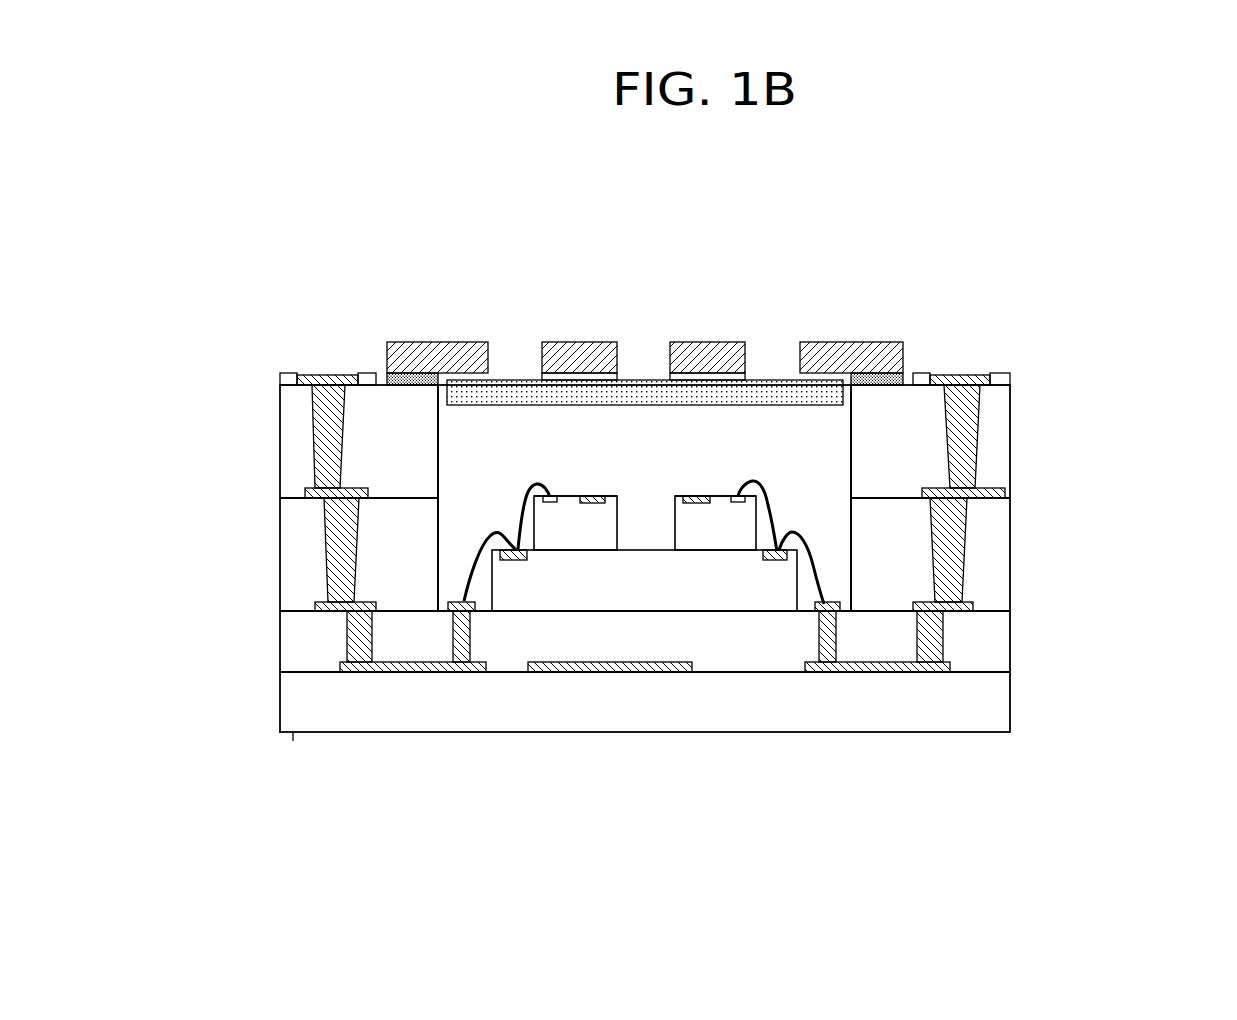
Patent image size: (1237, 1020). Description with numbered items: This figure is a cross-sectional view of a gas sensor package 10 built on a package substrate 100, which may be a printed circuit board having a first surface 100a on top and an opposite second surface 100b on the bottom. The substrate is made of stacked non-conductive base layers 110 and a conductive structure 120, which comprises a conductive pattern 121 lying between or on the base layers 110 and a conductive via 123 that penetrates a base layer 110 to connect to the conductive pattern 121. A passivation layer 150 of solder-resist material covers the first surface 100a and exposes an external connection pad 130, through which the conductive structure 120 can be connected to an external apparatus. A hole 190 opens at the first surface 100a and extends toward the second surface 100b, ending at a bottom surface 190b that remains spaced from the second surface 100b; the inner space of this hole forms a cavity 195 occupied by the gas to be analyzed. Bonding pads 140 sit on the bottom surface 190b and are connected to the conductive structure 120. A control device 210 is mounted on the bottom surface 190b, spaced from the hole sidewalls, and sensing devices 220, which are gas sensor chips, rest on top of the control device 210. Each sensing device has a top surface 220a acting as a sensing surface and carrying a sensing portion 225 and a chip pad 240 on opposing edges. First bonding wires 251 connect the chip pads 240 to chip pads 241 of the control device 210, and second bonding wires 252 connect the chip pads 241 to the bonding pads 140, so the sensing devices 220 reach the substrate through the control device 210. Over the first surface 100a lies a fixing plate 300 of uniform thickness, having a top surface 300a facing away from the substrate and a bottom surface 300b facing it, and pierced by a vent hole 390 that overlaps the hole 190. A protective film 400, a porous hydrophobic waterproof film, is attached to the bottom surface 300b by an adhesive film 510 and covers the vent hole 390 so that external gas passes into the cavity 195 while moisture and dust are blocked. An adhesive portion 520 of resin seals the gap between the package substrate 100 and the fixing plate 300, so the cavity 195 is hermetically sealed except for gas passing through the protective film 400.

The gas sensor package 10 is at (1110, 254).
The package substrate 100 is at (1015, 385).
The first surface 100a is at (293, 376).
The second surface 100b is at (293, 741).
The base layer 110 is at (998, 703).
The conductive structure 120 is at (731, 523).
The conductive pattern 121 is at (983, 493).
The conductive via 123 is at (963, 438).
The external connection pad 130 is at (951, 380).
The bonding pad 140 is at (457, 603).
The passivation layer 150 is at (1001, 378).
The hole 190 is at (452, 535).
The bottom surface of the hole 190b is at (765, 611).
The cavity 195 is at (715, 441).
The control device 210 is at (713, 588).
The sensing device 220 is at (573, 540).
The top surface of the sensing device 220a is at (607, 496).
The sensing portion 225 is at (593, 503).
The chip pad of the sensing device 240 is at (552, 503).
The chip pad of the control device 241 is at (508, 560).
The first bonding wire 251 is at (533, 493).
The second bonding wire 252 is at (485, 563).
The fixing plate 300 is at (857, 347).
The top surface of the fixing plate 300a is at (453, 342).
The bottom surface of the fixing plate 300b is at (596, 373).
The vent hole 390 is at (498, 365).
The protective film 400 is at (640, 393).
The adhesive film 510 is at (807, 377).
The adhesive portion 520 is at (411, 382).